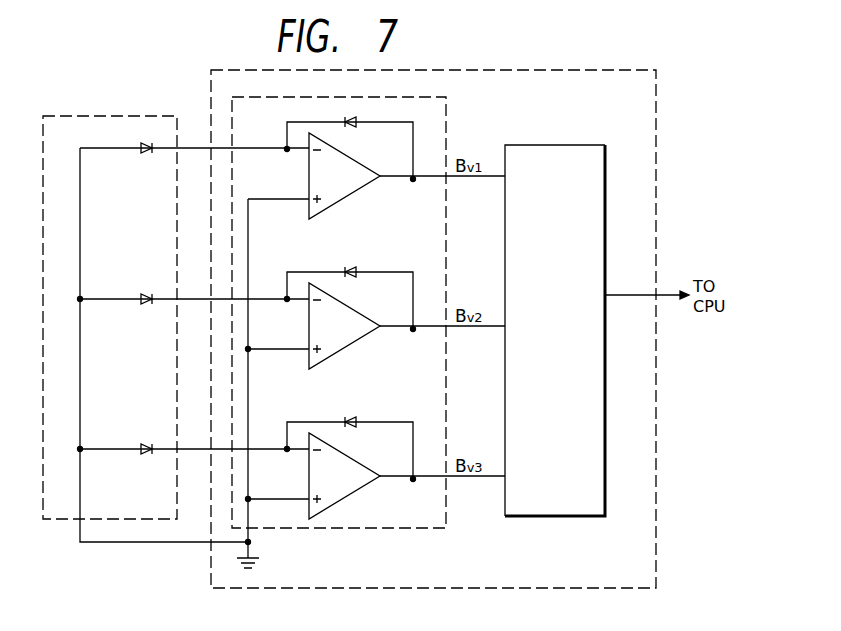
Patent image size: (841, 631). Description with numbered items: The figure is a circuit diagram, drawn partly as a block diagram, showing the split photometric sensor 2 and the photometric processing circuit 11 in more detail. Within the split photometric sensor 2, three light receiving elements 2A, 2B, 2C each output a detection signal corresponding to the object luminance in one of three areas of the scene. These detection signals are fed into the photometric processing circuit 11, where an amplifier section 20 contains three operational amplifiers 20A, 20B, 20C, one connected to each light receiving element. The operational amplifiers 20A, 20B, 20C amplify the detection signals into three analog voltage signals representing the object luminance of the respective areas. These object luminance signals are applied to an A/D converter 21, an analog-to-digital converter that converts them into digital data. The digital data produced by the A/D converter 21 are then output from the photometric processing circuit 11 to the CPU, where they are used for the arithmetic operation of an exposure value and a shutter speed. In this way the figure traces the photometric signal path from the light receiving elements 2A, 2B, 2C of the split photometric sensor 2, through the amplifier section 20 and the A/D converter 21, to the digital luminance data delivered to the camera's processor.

The split photometric sensor 2 is at (172, 116).
The light receiving element 2A is at (147, 154).
The light receiving element 2B is at (147, 305).
The light receiving element 2C is at (147, 455).
The photometric processing circuit 11 is at (603, 70).
The amplifier section 20 is at (447, 122).
The operational amplifier 20A is at (355, 190).
The operational amplifier 20B is at (355, 340).
The operational amplifier 20C is at (355, 490).
The A/D converter 21 is at (591, 145).